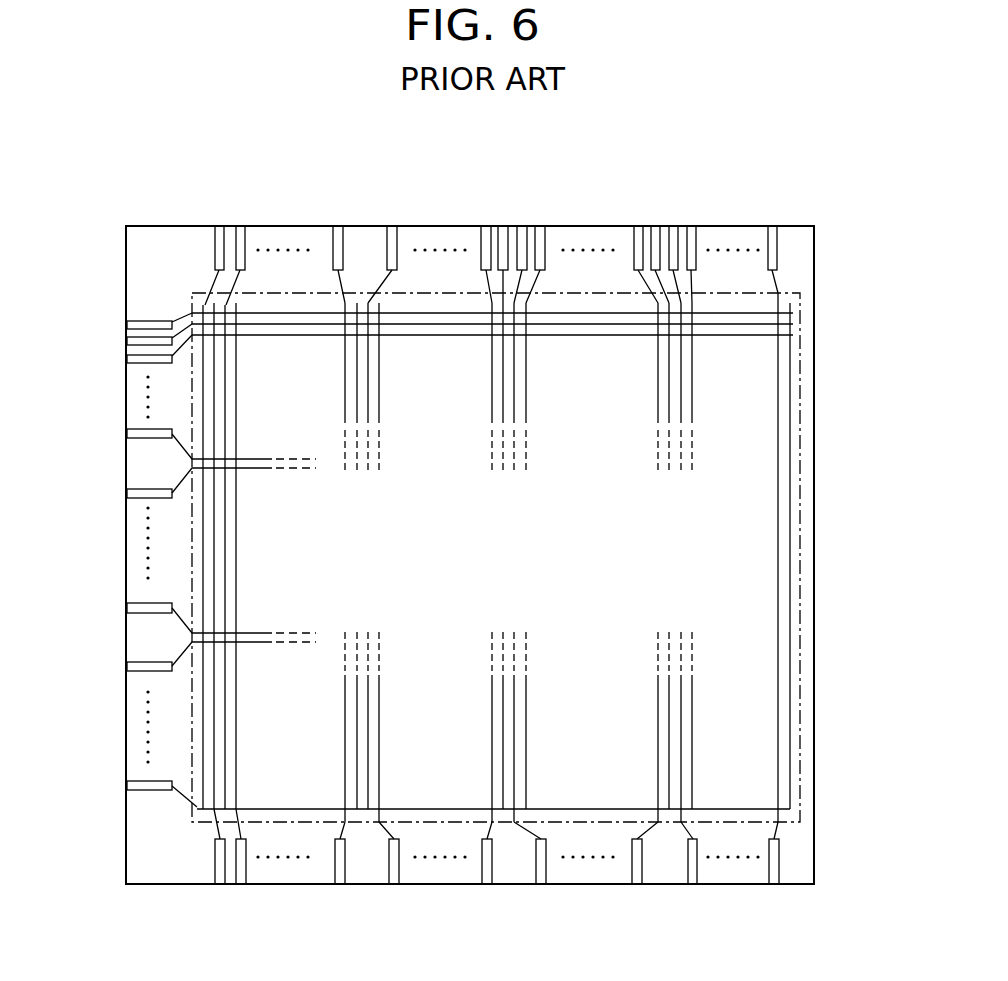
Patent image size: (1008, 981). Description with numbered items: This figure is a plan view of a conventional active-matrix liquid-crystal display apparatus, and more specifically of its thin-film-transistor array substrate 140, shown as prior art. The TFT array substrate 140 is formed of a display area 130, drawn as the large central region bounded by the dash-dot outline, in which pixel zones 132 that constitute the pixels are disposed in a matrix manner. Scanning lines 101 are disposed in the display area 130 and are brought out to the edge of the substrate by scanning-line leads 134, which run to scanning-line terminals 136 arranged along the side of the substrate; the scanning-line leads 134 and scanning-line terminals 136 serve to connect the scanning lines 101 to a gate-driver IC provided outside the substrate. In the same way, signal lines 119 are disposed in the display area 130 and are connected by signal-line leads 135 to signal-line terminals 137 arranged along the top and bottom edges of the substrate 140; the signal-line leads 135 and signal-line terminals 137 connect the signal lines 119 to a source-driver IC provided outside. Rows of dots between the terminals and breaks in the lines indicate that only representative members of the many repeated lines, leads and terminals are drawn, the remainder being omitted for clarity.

The scanning lines 101 is at (463, 322).
The signal lines 119 is at (225, 590).
The display area 130 is at (814, 477).
The pixel zones 132 is at (228, 312).
The scanning-line leads 134 is at (190, 340).
The signal-line leads 135 is at (240, 294).
The scanning-line terminals 136 is at (128, 342).
The signal-line terminals 137 is at (240, 226).
The TFT array substrate 140 is at (138, 212).